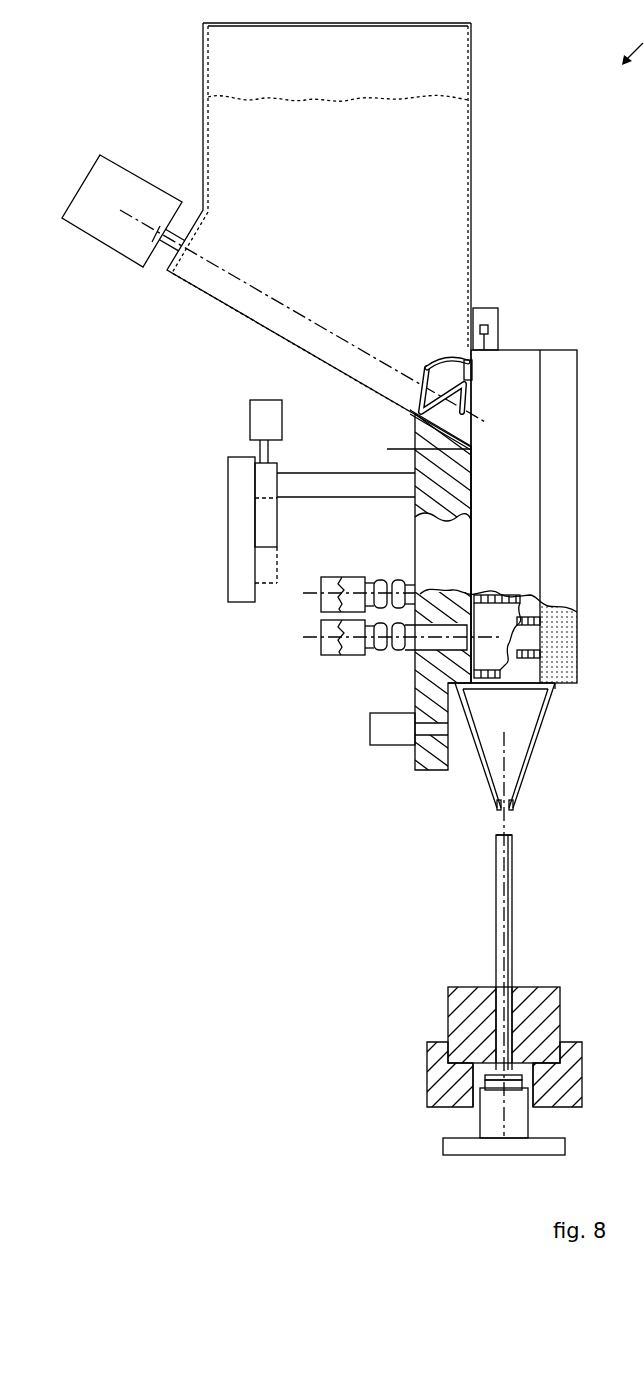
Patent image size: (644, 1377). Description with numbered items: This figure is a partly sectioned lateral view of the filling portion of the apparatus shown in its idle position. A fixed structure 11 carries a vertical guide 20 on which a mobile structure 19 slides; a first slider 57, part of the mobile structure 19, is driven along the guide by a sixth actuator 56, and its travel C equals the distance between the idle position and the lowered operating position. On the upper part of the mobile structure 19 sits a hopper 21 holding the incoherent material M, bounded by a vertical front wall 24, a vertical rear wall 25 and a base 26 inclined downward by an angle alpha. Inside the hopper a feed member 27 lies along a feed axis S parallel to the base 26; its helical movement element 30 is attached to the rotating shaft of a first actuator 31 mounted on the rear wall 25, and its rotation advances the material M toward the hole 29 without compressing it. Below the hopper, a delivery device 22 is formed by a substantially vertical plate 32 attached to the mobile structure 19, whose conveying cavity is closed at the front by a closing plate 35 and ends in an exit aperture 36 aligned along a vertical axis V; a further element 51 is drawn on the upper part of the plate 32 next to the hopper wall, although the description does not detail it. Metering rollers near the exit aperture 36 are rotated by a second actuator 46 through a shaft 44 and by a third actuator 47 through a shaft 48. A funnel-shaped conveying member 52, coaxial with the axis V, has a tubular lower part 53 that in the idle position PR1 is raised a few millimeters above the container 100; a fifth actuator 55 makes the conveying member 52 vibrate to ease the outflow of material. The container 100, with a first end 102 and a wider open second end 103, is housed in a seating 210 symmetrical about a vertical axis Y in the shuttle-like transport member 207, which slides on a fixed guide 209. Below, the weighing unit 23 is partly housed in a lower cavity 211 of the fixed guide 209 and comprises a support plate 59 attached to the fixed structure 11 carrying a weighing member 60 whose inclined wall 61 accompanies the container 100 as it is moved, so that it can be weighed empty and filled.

The fixed structure 11 is at (231, 434).
The mobile structure 19 is at (343, 481).
The vertical guide 20 is at (237, 479).
The hopper 21 is at (457, 65).
The delivery device 22 is at (578, 699).
The weighing unit 23 is at (413, 1133).
The front wall 24 is at (470, 149).
The rear wall 25 is at (203, 45).
The base 26 is at (462, 437).
The feed member 27 is at (444, 366).
The hole 29 is at (466, 383).
The movement element 30 is at (467, 394).
The first actuator 31 is at (122, 176).
The plate 32 is at (525, 356).
The closing plate 35 is at (576, 374).
The exit aperture 36 is at (523, 672).
The shaft 44 is at (383, 580).
The second actuator 46 is at (354, 580).
The third actuator 47 is at (331, 578).
The shaft 48 is at (398, 582).
The sensor 51 is at (482, 318).
The conveying member 52 is at (532, 730).
The lower part 53 is at (513, 806).
The fifth actuator 55 is at (378, 740).
The sixth actuator 56 is at (275, 424).
The first slider 57 is at (270, 517).
The support plate 59 is at (483, 1122).
The weighing member 60 is at (493, 1083).
The inclined wall 61 is at (487, 1076).
The container 100 is at (512, 905).
The first end 102 is at (537, 1077).
The second end 103 is at (513, 838).
The transport member 207 is at (553, 1000).
The fixed guide 209 is at (575, 1053).
The seating 210 is at (505, 986).
The lower cavity 211 is at (530, 1105).
The incoherent material M is at (448, 210).
The feed axis S is at (226, 270).
The travel C is at (262, 583).
The angle alpha is at (397, 412).
The vertical axis V is at (502, 827).
The vertical axis Y is at (495, 996).
The idle position PR1 is at (442, 810).